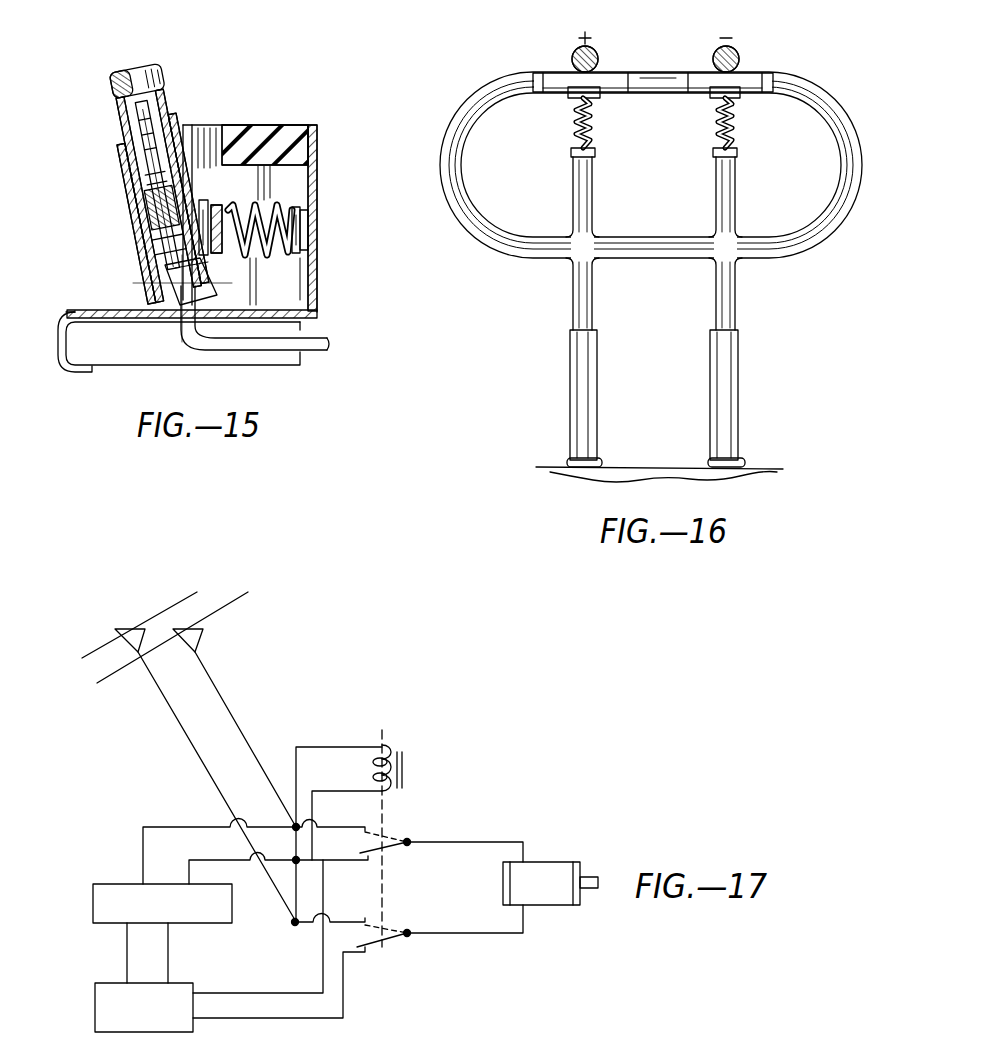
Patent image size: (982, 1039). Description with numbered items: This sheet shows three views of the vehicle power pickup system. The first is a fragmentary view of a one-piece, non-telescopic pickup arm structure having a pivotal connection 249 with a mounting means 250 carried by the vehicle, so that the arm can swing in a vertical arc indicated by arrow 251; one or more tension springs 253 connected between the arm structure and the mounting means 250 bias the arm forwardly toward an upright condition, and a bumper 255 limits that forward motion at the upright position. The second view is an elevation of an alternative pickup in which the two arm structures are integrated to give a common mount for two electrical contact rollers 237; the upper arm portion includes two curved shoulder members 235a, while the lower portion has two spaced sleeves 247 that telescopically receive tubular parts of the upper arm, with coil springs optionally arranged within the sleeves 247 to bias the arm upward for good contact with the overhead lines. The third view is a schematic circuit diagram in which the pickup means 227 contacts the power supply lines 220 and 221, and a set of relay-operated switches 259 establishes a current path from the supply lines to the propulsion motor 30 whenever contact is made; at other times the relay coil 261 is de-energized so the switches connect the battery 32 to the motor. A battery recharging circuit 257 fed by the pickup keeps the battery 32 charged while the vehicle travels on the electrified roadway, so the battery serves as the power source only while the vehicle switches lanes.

In FIG. 16, the power supply line 220 is at (575, 50).
In FIG. 17, the power supply line 220 is at (187, 596).
In FIG. 16, the power supply line 221 is at (740, 52).
In FIG. 17, the power supply line 221 is at (232, 603).
In FIG. 16, the electrical contact roller 237 is at (612, 73).
In FIG. 16, the curved shoulder member 235a is at (450, 122).
In FIG. 16, the sleeve 247 is at (570, 382).
In FIG. 15, the arrow 251 is at (165, 83).
In FIG. 15, the bumper 255 is at (248, 126).
In FIG. 15, the tension spring 253 is at (280, 203).
In FIG. 15, the mounting means 250 is at (320, 272).
In FIG. 15, the pivotal connection 249 is at (166, 279).
In FIG. 17, the pickup means 227 is at (190, 743).
In FIG. 17, the relay coil 261 is at (385, 745).
In FIG. 17, the propulsion motor 30 is at (543, 862).
In FIG. 17, the relay-operated switch 259 is at (388, 940).
In FIG. 17, the battery recharging circuit 257 is at (93, 911).
In FIG. 17, the battery pack 32 is at (95, 1024).